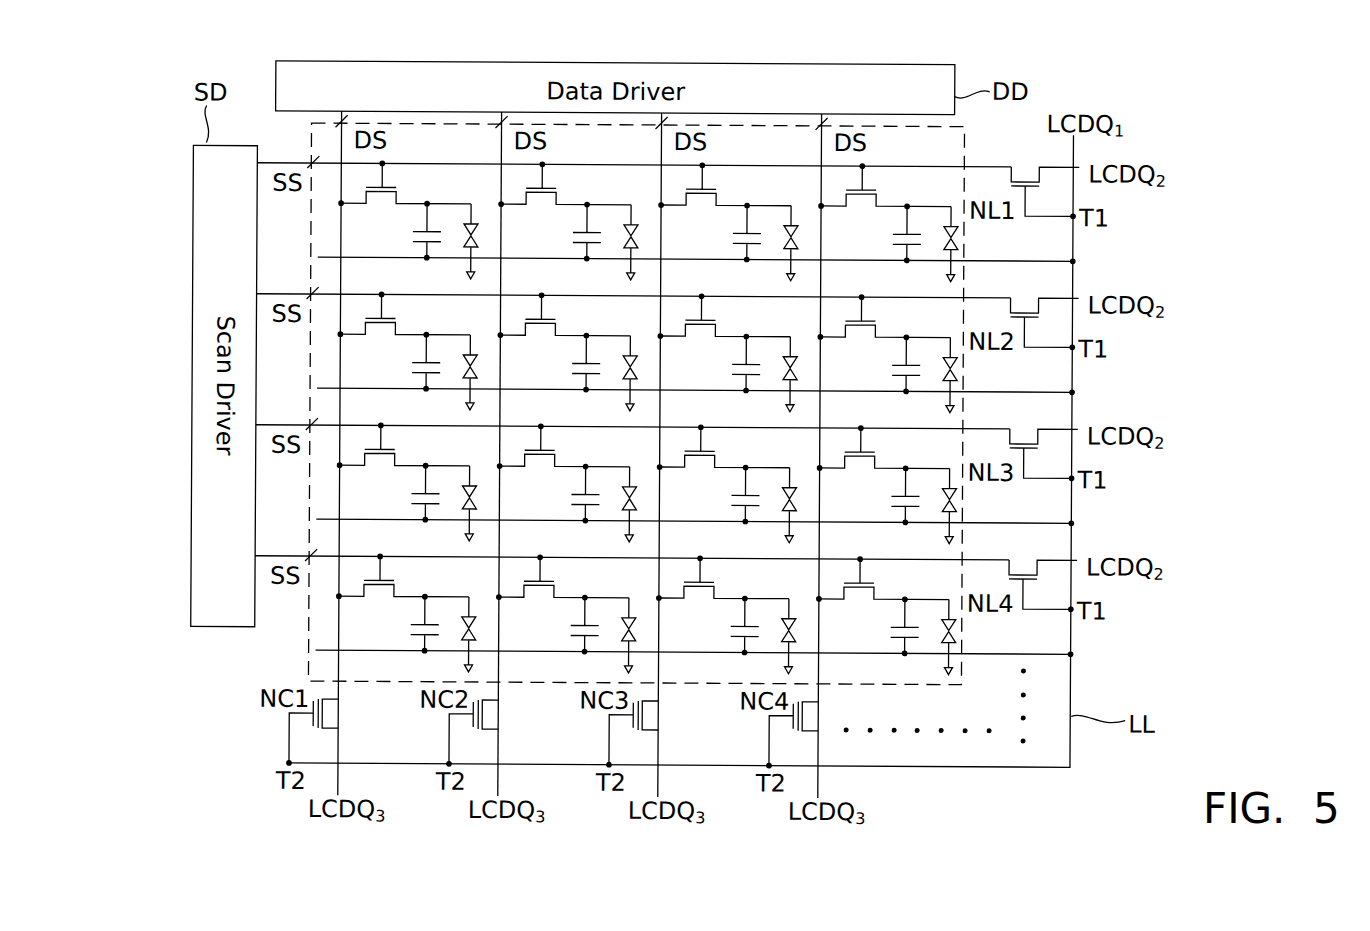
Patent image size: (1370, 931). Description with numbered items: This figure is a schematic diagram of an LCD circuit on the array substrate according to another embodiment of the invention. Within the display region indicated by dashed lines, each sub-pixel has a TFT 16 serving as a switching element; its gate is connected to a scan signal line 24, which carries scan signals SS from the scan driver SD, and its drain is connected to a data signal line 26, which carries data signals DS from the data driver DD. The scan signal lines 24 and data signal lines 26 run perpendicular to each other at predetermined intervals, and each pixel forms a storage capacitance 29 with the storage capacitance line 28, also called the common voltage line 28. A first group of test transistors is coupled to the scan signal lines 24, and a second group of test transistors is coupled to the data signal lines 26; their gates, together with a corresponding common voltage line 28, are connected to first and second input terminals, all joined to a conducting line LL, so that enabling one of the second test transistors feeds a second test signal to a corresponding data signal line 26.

The TFT 16 is at (396, 197).
The scan signal line 24 is at (318, 158).
The data signal line 26 is at (502, 215).
The storage capacitance line 28 is at (651, 253).
The storage capacitance 29 is at (413, 233).